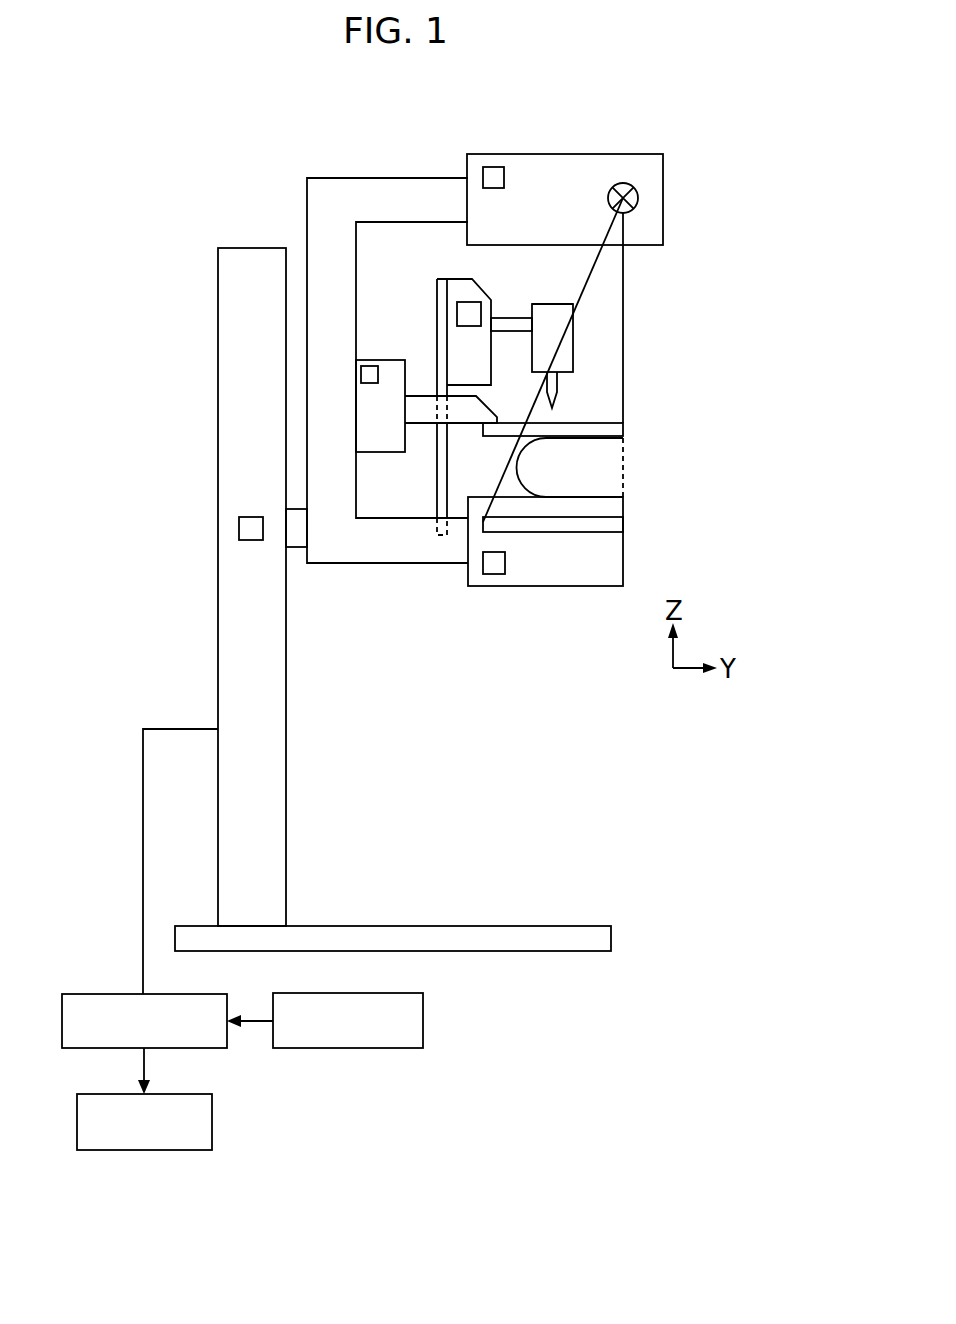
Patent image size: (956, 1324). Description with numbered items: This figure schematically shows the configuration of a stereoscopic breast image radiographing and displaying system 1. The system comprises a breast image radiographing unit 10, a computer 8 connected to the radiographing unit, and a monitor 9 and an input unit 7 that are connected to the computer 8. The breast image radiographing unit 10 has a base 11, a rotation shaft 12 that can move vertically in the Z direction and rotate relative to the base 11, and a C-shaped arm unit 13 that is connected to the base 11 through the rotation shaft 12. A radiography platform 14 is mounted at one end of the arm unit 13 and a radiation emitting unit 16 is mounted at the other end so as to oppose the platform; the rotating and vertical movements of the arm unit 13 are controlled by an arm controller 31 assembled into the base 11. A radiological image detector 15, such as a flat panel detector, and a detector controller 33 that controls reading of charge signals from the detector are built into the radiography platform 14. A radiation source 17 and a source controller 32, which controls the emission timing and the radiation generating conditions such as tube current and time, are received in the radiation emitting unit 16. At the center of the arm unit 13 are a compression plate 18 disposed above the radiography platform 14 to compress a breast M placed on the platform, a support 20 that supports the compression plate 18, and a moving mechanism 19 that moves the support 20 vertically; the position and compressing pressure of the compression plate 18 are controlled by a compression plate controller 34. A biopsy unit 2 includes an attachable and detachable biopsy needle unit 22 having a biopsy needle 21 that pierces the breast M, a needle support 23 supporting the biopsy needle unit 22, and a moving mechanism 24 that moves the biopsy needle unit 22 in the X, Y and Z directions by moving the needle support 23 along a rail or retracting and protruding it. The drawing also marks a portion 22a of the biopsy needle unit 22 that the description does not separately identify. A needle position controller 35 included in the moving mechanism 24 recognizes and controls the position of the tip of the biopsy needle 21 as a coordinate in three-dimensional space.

The breast image radiographing and displaying system 1 is at (138, 151).
The biopsy unit 2 is at (452, 269).
The input unit 7 is at (375, 1048).
The computer 8 is at (95, 993).
The monitor 9 is at (178, 1150).
The breast image radiographing unit 10 is at (206, 208).
The base 11 is at (218, 297).
The rotation shaft 12 is at (295, 547).
The arm unit 13 is at (345, 178).
The radiography platform 14 is at (593, 586).
The radiological image detector 15 is at (623, 497).
The radiation emitting unit 16 is at (663, 172).
The radiation source 17 is at (638, 198).
The compression plate 18 is at (600, 423).
The moving mechanism 19 is at (372, 452).
The support 20 is at (465, 412).
The biopsy needle 21 is at (557, 383).
The biopsy needle unit 22 is at (594, 323).
The spindle housing top 22a is at (556, 304).
The needle support 23 is at (510, 318).
The moving mechanism 24 is at (482, 287).
The arm controller 31 is at (239, 528).
The source controller 32 is at (493, 167).
The detector controller 33 is at (493, 574).
The compression plate controller 34 is at (370, 366).
The needle position controller 35 is at (468, 326).
The breast M is at (610, 452).